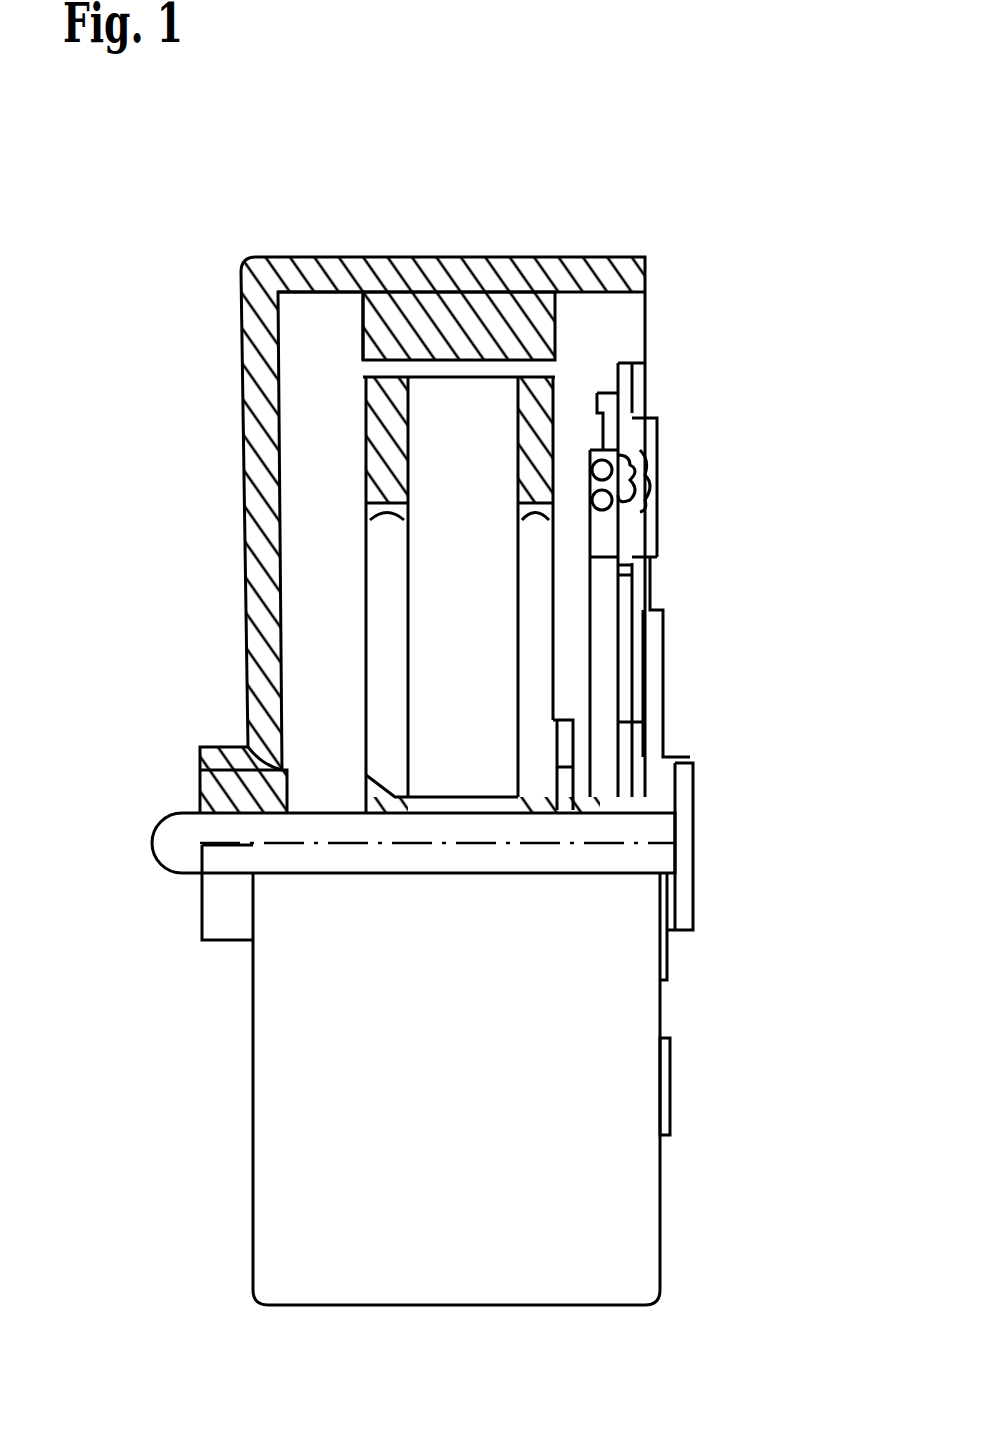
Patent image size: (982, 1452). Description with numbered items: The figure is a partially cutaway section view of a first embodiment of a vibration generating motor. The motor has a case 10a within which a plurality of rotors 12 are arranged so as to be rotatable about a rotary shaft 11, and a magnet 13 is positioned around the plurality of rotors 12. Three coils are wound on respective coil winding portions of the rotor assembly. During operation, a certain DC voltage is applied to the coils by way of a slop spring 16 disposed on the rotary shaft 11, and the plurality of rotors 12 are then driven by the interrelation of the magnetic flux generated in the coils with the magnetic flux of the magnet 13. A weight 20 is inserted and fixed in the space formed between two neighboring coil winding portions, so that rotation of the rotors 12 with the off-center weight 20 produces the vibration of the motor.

The case 10a is at (240, 332).
The rotary shaft 11 is at (182, 838).
The rotors 12 is at (345, 335).
The magnet 13 is at (490, 312).
The slop spring 16 is at (663, 792).
The weight 20 is at (340, 440).